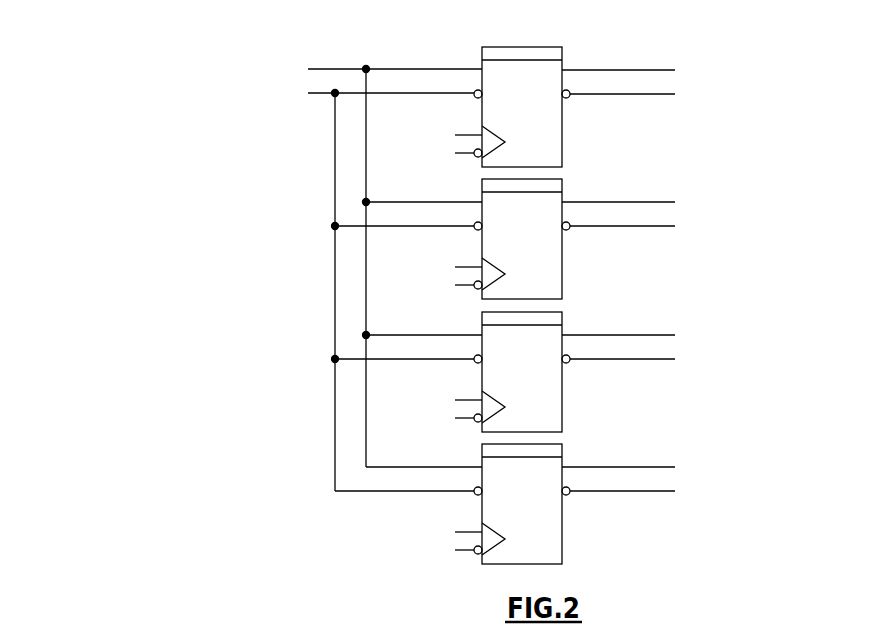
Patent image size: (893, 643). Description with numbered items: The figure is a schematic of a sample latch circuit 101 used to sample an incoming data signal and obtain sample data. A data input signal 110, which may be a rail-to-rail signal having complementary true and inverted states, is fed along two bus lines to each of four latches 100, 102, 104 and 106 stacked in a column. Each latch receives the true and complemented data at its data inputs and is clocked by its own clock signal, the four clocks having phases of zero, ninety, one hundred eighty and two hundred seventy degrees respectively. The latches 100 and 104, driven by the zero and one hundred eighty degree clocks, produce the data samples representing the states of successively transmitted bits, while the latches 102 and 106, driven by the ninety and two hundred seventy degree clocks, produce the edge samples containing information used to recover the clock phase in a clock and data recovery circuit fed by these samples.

The sample latch circuit 101 is at (715, 22).
The data input signal 110 is at (250, 99).
The latch 100 is at (556, 68).
The latch 102 is at (556, 200).
The latch 104 is at (556, 333).
The latch 106 is at (556, 465).